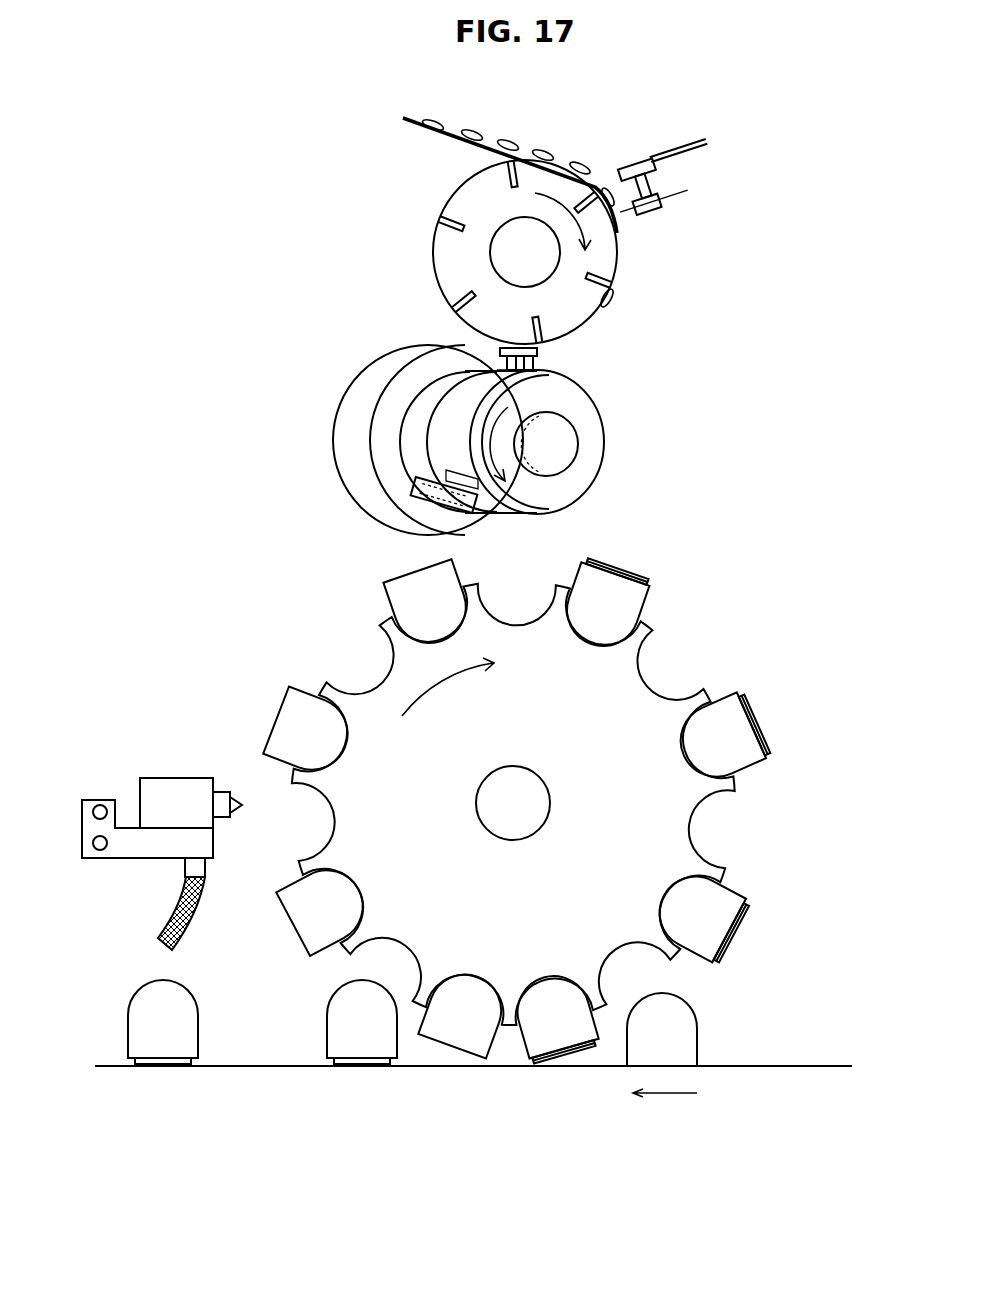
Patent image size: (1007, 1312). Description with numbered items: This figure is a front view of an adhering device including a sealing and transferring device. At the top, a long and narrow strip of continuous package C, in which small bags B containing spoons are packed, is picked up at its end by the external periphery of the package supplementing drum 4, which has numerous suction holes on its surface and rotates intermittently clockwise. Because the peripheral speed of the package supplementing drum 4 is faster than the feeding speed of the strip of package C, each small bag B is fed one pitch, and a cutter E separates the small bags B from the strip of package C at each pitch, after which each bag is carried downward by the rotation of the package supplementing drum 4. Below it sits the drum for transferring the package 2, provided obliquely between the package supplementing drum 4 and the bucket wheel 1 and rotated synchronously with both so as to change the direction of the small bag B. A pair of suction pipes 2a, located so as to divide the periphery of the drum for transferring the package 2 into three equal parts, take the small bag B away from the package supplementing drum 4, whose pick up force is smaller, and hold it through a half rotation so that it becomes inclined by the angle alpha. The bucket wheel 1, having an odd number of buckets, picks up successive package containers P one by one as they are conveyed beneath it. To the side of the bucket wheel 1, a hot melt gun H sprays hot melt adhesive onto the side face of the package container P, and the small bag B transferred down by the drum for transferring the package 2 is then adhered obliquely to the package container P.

The long and narrow strip of continuous package C is at (453, 128).
The cutter E is at (683, 193).
The package supplementing drum 4 is at (617, 255).
The small bag B is at (607, 300).
The suction pipes 2a is at (493, 363).
The drum for transferring a package 2 is at (604, 438).
The package container P is at (390, 603).
The bucket wheel 1 is at (630, 667).
The hot melt gun H is at (190, 778).